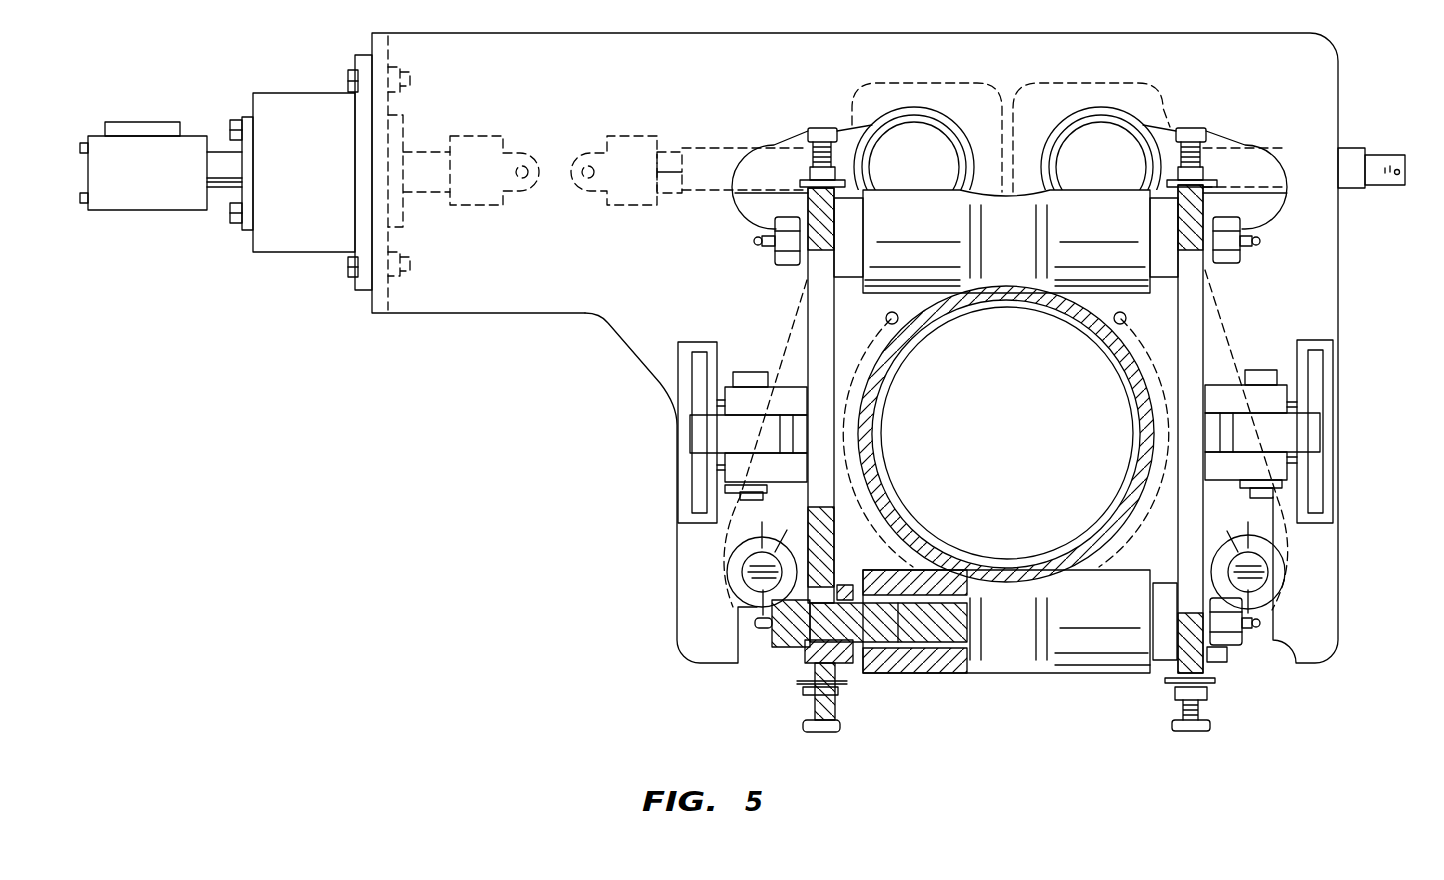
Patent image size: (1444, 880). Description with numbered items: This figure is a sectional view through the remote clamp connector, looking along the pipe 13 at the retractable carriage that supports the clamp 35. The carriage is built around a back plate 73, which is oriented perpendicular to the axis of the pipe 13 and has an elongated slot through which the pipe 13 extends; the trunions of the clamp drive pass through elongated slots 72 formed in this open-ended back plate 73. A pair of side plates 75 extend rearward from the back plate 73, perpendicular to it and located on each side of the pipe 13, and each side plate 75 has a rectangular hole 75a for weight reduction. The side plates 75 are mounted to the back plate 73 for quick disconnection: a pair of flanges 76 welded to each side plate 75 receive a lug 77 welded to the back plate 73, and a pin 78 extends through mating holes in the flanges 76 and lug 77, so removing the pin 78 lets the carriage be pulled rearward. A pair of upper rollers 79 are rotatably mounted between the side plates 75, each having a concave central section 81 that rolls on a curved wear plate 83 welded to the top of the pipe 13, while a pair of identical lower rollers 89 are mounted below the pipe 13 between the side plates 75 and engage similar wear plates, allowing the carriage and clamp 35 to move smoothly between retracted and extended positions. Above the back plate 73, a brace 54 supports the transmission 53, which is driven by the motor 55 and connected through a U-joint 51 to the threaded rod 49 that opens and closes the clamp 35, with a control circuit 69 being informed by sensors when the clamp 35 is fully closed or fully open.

The pipe 13 is at (1083, 318).
The clamp 35 is at (1143, 110).
The threaded rod 49 is at (1252, 165).
The U-joint 51 is at (557, 190).
The transmission 53 is at (310, 230).
The brace 54 is at (375, 305).
The motor 55 is at (158, 195).
The control circuit 69 is at (167, 127).
The elongated slots 72 is at (745, 205).
The back plate 73 is at (657, 323).
The side plates 75 is at (1205, 665).
The rectangular hole 75a is at (1193, 307).
The flanges 76 is at (1272, 393).
The lug 77 is at (1295, 435).
The pin 78 is at (1260, 372).
The upper rollers 79 is at (913, 280).
The concave central section 81 is at (973, 193).
The wear plate 83 is at (995, 310).
The lower rollers 89 is at (1080, 648).